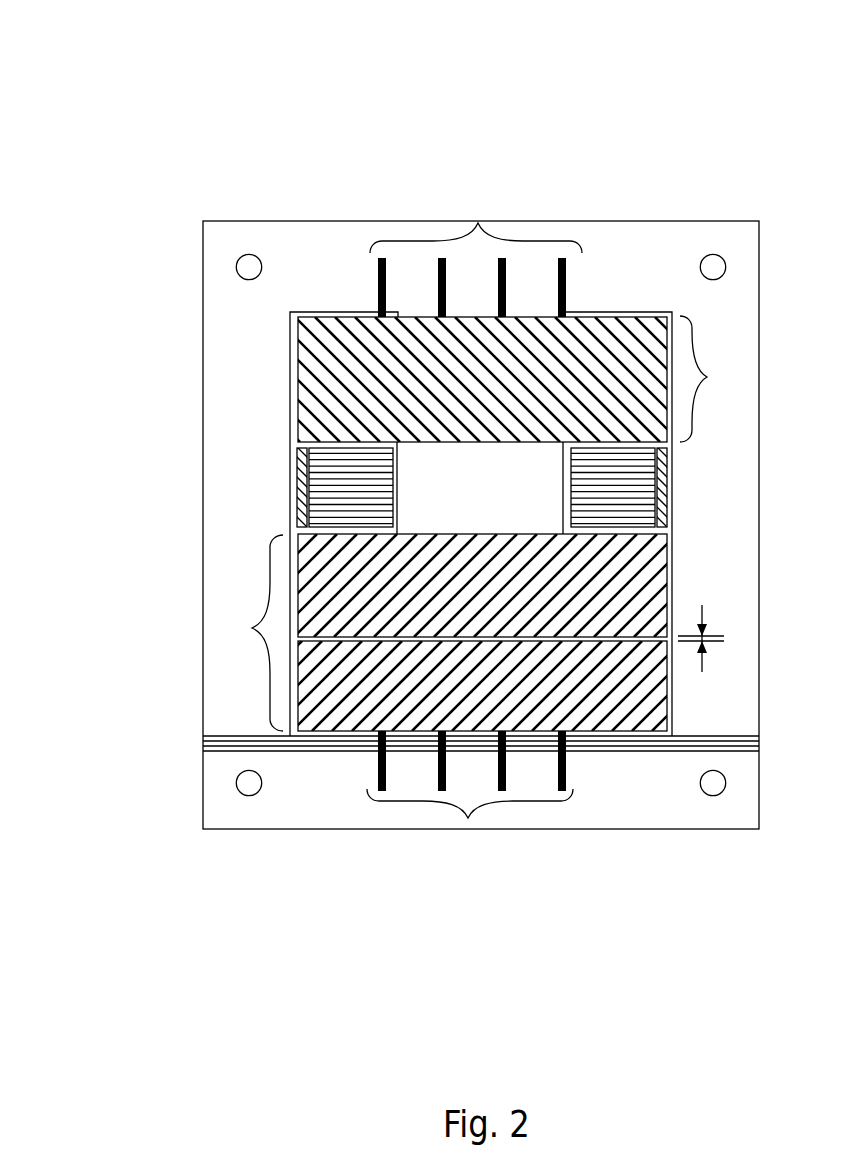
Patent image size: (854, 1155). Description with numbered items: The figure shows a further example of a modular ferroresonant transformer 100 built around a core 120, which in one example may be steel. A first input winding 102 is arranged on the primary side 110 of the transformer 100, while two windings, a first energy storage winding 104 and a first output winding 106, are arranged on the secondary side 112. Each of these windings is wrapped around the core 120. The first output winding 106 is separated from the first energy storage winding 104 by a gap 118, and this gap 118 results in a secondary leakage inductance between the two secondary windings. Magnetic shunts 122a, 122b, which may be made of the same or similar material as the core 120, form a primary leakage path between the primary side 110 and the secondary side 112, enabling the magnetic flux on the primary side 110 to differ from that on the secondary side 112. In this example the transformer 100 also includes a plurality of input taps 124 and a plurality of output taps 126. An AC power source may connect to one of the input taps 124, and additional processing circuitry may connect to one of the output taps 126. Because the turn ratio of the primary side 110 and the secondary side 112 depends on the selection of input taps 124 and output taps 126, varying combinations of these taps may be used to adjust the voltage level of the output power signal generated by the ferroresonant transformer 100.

The ferroresonant transformer 100 is at (145, 63).
The first input winding 102 is at (605, 317).
The first energy storage winding 104 is at (453, 536).
The first output winding 106 is at (362, 733).
The primary side 110 is at (717, 379).
The secondary side 112 is at (247, 633).
The gap 118 is at (713, 650).
The core 120 is at (620, 240).
The magnetic shunt 122a is at (306, 451).
The magnetic shunt 122b is at (653, 472).
The input taps 124 is at (476, 250).
The output taps 126 is at (470, 797).